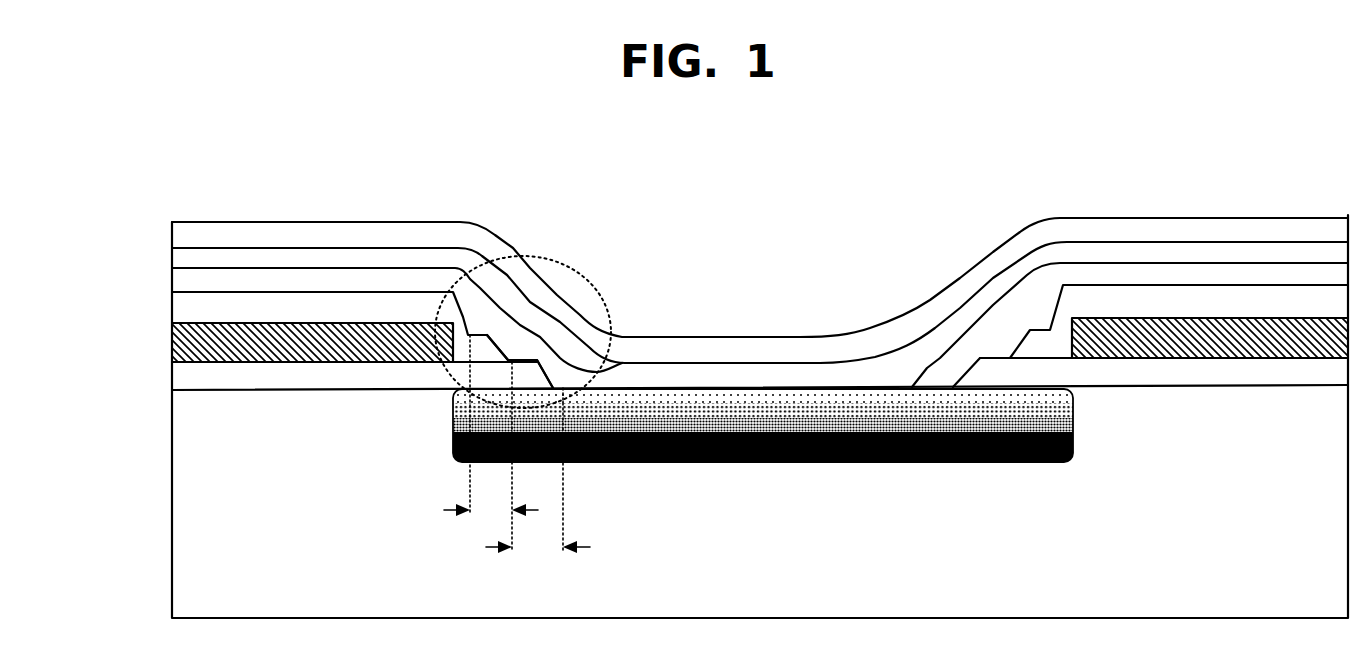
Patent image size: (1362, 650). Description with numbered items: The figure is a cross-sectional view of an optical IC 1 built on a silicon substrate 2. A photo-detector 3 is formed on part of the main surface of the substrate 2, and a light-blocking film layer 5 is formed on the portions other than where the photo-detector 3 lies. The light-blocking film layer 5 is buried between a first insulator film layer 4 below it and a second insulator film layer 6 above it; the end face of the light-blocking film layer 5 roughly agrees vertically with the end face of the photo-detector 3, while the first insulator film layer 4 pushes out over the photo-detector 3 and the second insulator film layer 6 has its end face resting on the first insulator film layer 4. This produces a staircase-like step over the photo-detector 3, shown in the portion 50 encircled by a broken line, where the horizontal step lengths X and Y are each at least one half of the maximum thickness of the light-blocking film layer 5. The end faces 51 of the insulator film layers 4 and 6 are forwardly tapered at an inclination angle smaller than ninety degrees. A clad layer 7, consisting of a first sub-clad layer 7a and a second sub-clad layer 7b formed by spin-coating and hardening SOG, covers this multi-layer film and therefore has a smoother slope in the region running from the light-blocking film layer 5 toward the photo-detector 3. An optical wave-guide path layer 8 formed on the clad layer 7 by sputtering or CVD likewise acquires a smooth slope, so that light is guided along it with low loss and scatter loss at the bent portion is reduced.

The optical IC 1 is at (752, 194).
The silicon substrate 2 is at (185, 530).
The photo-detector 3 is at (453, 431).
The first insulator film layer 4 is at (173, 377).
The light-blocking film layer 5 is at (171, 333).
The second insulator film layer 6 is at (180, 296).
The clad layer 7 is at (114, 218).
The first sub-clad layer 7a is at (187, 283).
The second sub-clad layer 7b is at (180, 250).
The optical wave-guide path layer 8 is at (173, 223).
The portion encircled by a broken line 50 is at (594, 283).
The end faces 51 is at (560, 358).